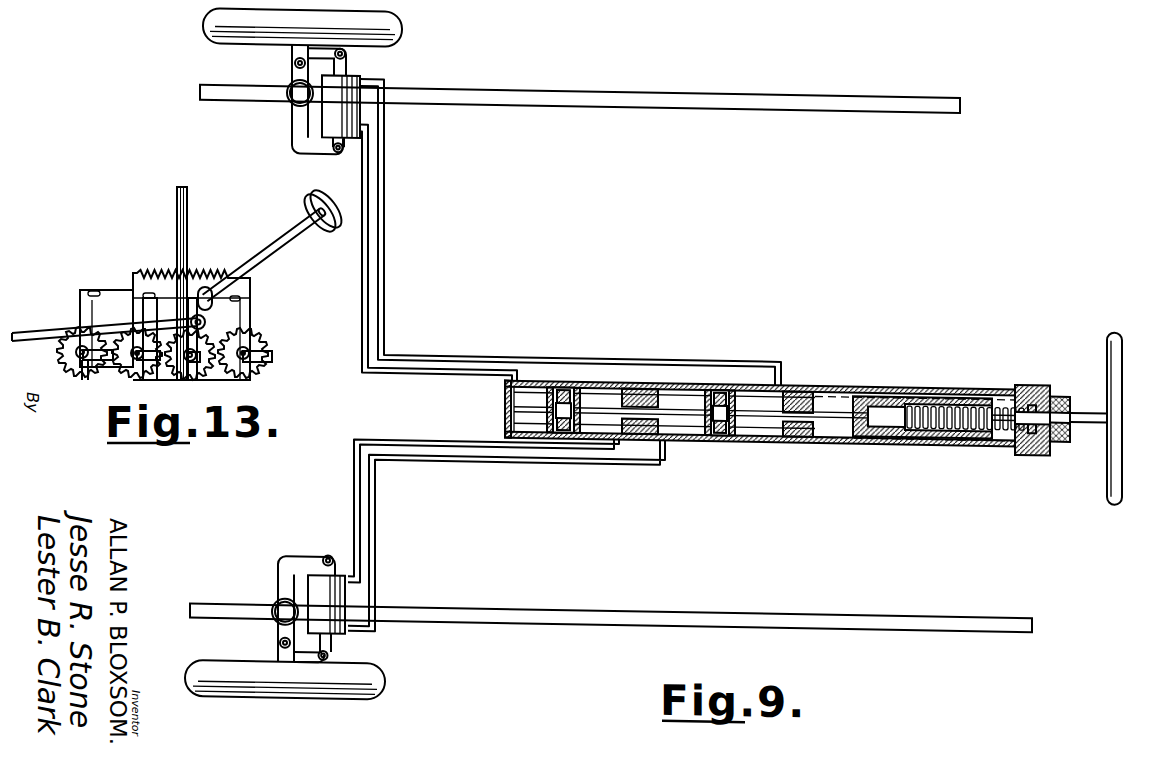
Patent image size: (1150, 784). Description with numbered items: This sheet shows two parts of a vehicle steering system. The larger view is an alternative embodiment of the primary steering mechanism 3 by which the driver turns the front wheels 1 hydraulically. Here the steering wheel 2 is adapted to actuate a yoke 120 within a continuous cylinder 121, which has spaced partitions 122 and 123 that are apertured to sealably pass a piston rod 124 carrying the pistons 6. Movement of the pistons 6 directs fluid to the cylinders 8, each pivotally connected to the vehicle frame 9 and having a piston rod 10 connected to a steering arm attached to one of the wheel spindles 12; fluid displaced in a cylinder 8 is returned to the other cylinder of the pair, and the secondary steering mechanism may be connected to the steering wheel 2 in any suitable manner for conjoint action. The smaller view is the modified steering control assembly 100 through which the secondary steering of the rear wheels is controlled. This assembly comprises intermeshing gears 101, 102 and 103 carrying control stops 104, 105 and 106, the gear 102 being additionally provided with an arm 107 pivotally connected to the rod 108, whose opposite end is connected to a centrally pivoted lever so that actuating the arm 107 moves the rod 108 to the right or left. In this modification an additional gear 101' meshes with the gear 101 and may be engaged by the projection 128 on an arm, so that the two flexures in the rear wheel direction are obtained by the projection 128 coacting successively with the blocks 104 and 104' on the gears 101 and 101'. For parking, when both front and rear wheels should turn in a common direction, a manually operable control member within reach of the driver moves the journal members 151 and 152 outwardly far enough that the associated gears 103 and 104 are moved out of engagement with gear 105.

In FIG. 9, the front wheels 1 is at (400, 29).
In FIG. 9, the steering wheel 2 is at (1107, 474).
In FIG. 9, the primary steering mechanism 3 is at (749, 362).
In FIG. 9, the pistons 6 is at (565, 379).
In FIG. 9, the cylinders 8 is at (328, 121).
In FIG. 9, the vehicle frame 9 is at (327, 560).
In FIG. 9, the piston rod 10 is at (342, 67).
In FIG. 9, the wheel spindles 12 is at (298, 58).
In FIG. 9, the yoke 120 is at (888, 431).
In FIG. 9, the continuous cylinder 121 is at (802, 438).
In FIG. 9, the partition 122 is at (800, 381).
In FIG. 9, the partition 123 is at (638, 436).
In FIG. 9, the piston rod 124 is at (688, 414).
In FIG. 13, the steering control assembly 100 is at (133, 310).
In FIG. 13, the gear 101 is at (127, 329).
In FIG. 13, the additional gear 101' is at (57, 355).
In FIG. 13, the gear 102 is at (193, 362).
In FIG. 13, the gear 103 is at (260, 362).
In FIG. 13, the control stop 104 is at (129, 363).
In FIG. 13, the block 104' is at (82, 374).
In FIG. 13, the control stop 105 is at (203, 330).
In FIG. 13, the control stop 106 is at (280, 355).
In FIG. 13, the arm 107 is at (193, 297).
In FIG. 13, the rod 108 is at (25, 330).
In FIG. 13, the projection 128 is at (163, 372).
In FIG. 13, the journal member 151 is at (252, 308).
In FIG. 13, the journal member 152 is at (135, 308).